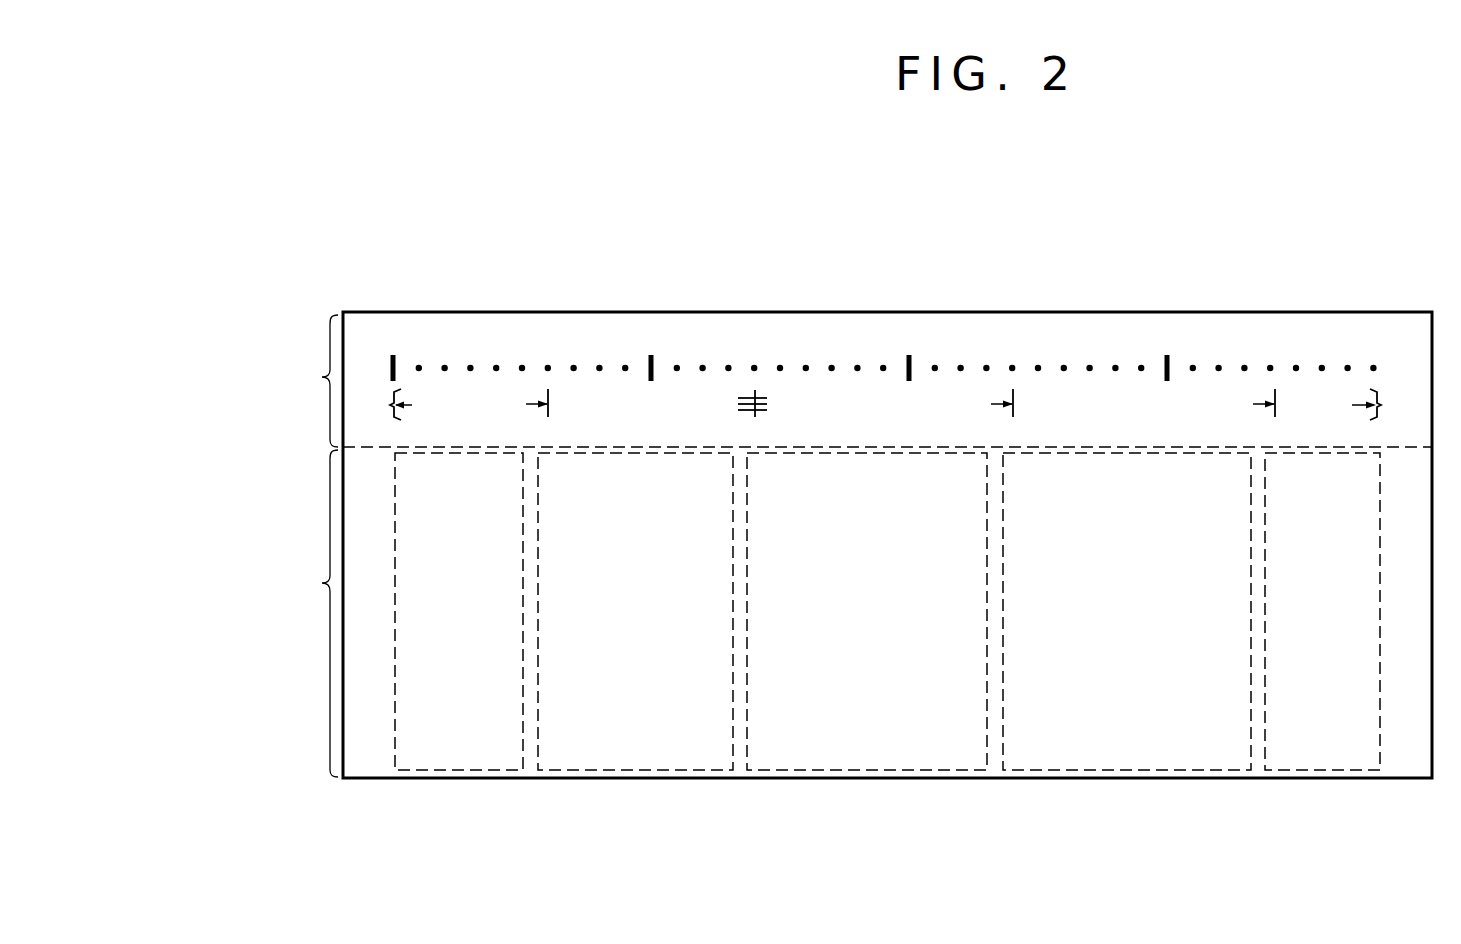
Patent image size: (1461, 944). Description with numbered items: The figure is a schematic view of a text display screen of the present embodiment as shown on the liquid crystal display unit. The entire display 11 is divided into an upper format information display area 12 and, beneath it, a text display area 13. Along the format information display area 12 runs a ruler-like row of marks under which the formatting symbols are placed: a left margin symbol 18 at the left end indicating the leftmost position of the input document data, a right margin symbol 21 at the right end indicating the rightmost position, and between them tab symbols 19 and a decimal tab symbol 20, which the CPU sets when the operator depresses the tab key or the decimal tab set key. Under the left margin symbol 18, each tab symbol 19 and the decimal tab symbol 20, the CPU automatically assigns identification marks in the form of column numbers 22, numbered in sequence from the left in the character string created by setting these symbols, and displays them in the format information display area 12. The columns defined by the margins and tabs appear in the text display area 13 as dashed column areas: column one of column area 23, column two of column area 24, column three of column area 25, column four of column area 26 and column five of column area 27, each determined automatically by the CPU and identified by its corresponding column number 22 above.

The display 11 is at (730, 792).
The format information display area 12 is at (747, 381).
The text display area 13 is at (227, 613).
The left margin symbol 18 is at (385, 388).
The tab symbol 19 is at (539, 388).
The decimal tab symbol 20 is at (743, 388).
The right margin symbol 21 is at (1365, 383).
The column numbers 22 is at (410, 425).
The column area 23 is at (432, 752).
The column area 24 is at (600, 748).
The column area 25 is at (815, 748).
The column area 26 is at (1072, 748).
The column area 27 is at (1305, 748).